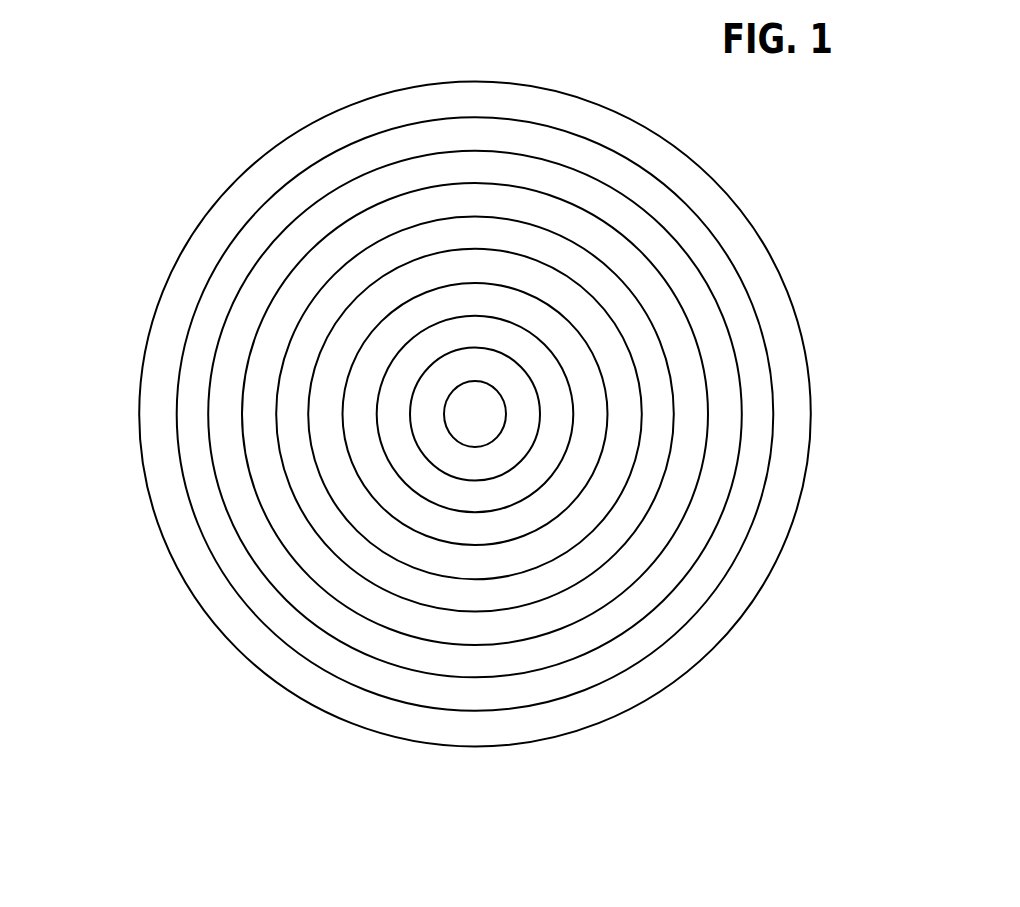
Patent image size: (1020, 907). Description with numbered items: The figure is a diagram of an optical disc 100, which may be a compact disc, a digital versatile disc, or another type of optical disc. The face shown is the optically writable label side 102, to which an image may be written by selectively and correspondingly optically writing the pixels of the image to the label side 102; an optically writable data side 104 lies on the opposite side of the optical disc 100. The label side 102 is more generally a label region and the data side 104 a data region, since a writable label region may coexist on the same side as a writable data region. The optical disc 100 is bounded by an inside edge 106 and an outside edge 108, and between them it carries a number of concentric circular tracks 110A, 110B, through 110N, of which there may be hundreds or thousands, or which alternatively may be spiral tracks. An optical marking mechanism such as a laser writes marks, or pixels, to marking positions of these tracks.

The optical disc 100 is at (146, 126).
The optically writable label side 102 is at (363, 115).
The optically writable data side 104 is at (771, 596).
The inside edge 106 is at (505, 400).
The outside edge 108 is at (810, 430).
The concentric circular track 110A is at (498, 316).
The concentric circular track 110B is at (498, 278).
The concentric circular track 110N is at (498, 146).